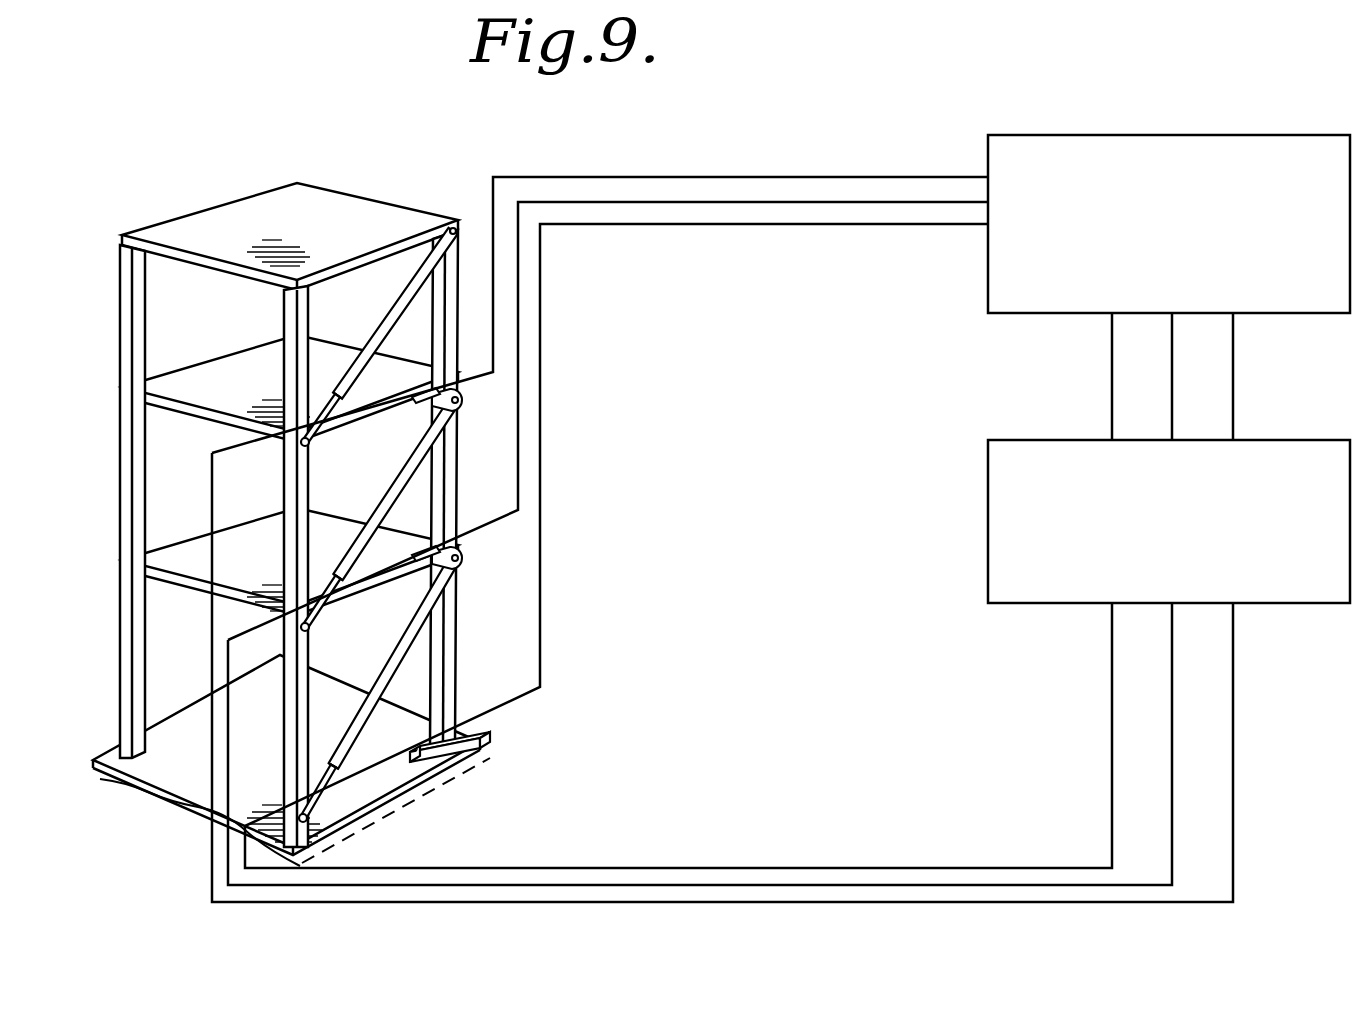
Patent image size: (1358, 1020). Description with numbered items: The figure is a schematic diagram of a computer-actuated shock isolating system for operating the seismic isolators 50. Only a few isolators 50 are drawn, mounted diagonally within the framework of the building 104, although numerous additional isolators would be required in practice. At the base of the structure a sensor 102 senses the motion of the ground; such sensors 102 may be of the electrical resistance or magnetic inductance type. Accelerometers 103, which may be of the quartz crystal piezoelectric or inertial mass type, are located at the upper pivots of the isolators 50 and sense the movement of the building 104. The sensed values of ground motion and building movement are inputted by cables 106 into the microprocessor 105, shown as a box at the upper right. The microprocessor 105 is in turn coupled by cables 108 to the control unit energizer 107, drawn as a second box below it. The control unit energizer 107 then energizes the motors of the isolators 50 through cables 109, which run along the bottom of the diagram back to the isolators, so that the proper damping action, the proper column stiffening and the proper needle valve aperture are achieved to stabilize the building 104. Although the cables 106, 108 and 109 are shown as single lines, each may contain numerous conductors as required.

The seismic isolator 50 is at (328, 437).
The sensor 102 is at (435, 762).
The accelerometer 103 is at (457, 412).
The building 104 is at (250, 197).
The microprocessor 105 is at (1015, 268).
The cables 106 is at (703, 178).
The control unit energizer 107 is at (1005, 568).
The cables 108 is at (1235, 358).
The cables 109 is at (930, 868).